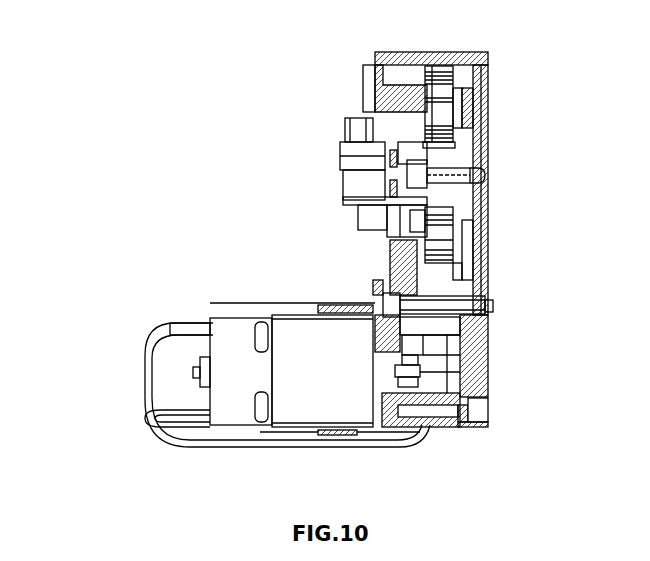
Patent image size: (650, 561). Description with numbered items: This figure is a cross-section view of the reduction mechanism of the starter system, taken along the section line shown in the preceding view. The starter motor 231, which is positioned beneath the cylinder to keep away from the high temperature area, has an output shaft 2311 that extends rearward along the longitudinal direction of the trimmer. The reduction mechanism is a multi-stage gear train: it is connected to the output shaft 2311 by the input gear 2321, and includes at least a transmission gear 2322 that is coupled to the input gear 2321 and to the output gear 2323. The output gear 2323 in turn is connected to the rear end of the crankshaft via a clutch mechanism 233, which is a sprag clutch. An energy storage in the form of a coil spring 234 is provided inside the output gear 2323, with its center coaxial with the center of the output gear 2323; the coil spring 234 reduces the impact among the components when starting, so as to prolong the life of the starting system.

The starter motor 231 is at (235, 392).
The clutch mechanism 233 is at (382, 167).
The coil spring 234 is at (440, 98).
The output shaft 2311 is at (413, 370).
The input gear 2321 is at (408, 362).
The transmission gear 2322 is at (420, 332).
The output gear 2323 is at (453, 268).